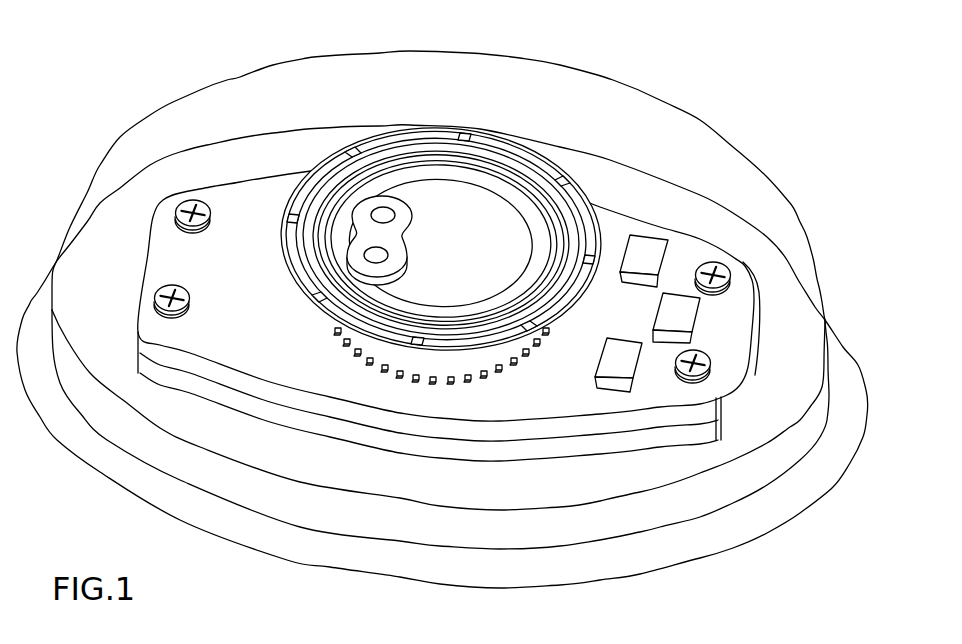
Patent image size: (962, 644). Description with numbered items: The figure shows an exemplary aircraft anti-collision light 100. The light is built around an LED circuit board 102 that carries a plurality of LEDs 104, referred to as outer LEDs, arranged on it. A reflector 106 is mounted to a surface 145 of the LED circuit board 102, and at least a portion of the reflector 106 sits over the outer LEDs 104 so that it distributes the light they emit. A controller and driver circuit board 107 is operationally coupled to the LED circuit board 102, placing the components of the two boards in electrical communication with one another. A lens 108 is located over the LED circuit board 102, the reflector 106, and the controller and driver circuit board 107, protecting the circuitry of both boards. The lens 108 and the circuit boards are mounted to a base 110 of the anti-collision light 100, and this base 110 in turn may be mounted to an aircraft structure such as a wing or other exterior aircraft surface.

The aircraft anti-collision light 100 is at (101, 110).
The LED circuit board 102 is at (254, 200).
The LEDs 104 is at (477, 383).
The reflector 106 is at (462, 131).
The controller and driver circuit board 107 is at (364, 436).
The lens 108 is at (612, 78).
The base 110 is at (822, 389).
The surface 145 is at (259, 312).